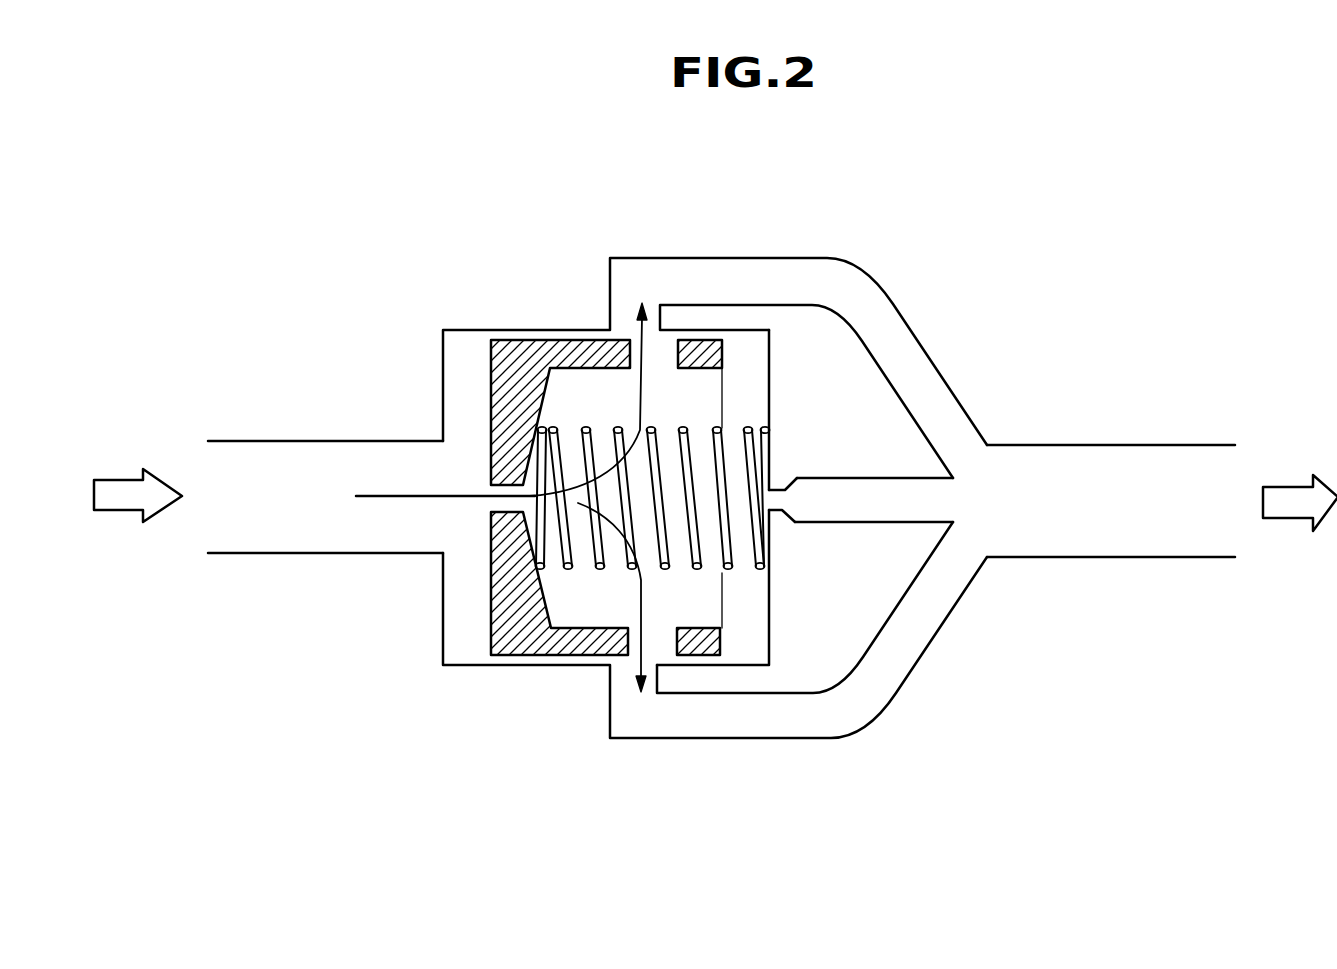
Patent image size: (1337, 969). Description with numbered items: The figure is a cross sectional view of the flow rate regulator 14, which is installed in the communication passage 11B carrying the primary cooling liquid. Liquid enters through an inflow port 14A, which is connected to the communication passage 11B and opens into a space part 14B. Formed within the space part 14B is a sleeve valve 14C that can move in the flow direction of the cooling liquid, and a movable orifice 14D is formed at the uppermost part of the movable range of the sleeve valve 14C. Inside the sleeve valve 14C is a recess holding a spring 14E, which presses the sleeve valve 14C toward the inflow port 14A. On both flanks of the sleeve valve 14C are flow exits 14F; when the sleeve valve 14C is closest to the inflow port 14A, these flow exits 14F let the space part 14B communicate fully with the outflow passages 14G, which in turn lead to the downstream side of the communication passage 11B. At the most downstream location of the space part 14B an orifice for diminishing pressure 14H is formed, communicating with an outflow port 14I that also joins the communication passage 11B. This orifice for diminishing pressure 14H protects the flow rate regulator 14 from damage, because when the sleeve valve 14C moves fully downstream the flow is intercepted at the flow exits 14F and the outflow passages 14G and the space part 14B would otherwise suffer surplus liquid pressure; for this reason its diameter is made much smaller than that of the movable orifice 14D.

The communication passage 11B is at (275, 530).
The flow rate regulator 14 is at (839, 201).
The inflow port 14A is at (410, 473).
The space part 14B is at (458, 622).
The sleeve valve 14C is at (521, 645).
The movable orifice 14D is at (490, 493).
The spring 14E is at (683, 428).
The flow exits 14F is at (669, 345).
The outflow passages 14G is at (830, 273).
The orifice for diminishing pressure 14H is at (773, 506).
The outflow port 14I is at (878, 505).